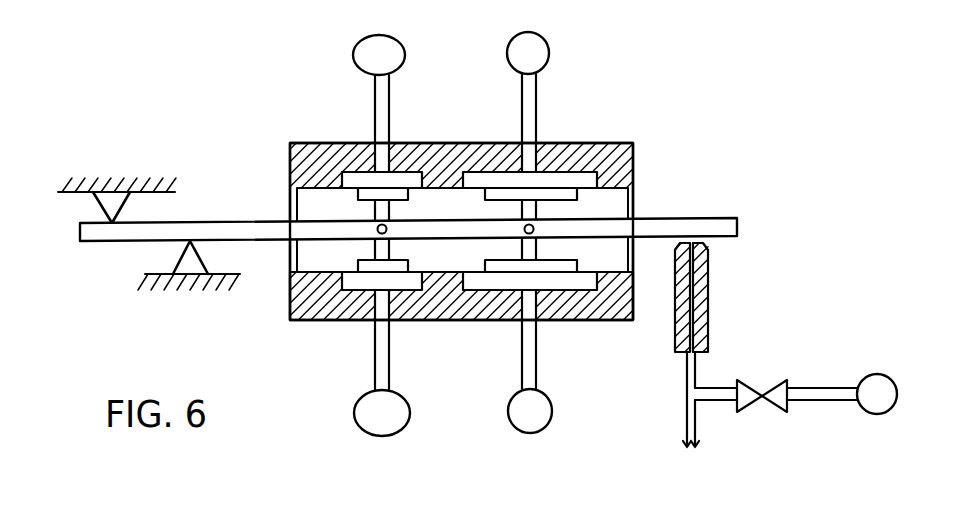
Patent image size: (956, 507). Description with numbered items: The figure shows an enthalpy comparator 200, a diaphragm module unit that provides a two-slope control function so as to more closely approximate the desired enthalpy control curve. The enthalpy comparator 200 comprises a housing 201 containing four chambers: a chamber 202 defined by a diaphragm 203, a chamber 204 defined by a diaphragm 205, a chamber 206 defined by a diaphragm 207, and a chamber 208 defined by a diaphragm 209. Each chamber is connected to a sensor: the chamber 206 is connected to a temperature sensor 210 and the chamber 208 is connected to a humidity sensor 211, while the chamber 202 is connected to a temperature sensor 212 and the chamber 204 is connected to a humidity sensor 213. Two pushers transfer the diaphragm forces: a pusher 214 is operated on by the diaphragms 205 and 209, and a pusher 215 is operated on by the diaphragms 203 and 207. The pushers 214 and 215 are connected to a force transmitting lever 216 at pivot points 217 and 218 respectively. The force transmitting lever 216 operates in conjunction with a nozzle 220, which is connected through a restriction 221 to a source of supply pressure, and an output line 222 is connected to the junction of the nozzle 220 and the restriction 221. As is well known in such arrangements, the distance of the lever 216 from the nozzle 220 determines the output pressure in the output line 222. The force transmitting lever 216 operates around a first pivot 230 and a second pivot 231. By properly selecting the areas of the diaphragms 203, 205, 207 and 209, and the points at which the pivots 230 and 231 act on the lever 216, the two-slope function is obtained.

The enthalpy comparator 200 is at (615, 92).
The housing 201 is at (622, 142).
The chamber 202 is at (568, 172).
The diaphragm 203 is at (600, 198).
The chamber 204 is at (413, 172).
The diaphragm 205 is at (352, 193).
The chamber 206 is at (585, 290).
The diaphragm 207 is at (468, 272).
The chamber 208 is at (408, 291).
The diaphragm 209 is at (325, 321).
The temperature sensor 210 is at (551, 416).
The humidity sensor 211 is at (409, 418).
The temperature sensor 212 is at (545, 40).
The humidity sensor 213 is at (400, 41).
The pusher 214 is at (404, 200).
The pusher 215 is at (521, 251).
The force transmitting lever 216 is at (218, 222).
The pivot point 217 is at (377, 231).
The pivot point 218 is at (534, 230).
The nozzle 220 is at (707, 275).
The restriction 221 is at (752, 382).
The output line 222 is at (695, 427).
The first pivot 230 is at (177, 258).
The second pivot 231 is at (97, 208).